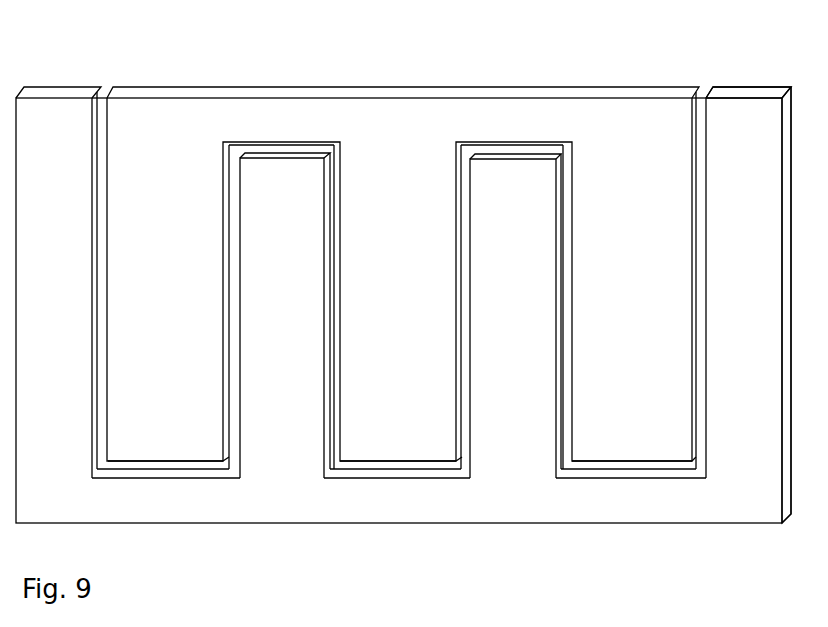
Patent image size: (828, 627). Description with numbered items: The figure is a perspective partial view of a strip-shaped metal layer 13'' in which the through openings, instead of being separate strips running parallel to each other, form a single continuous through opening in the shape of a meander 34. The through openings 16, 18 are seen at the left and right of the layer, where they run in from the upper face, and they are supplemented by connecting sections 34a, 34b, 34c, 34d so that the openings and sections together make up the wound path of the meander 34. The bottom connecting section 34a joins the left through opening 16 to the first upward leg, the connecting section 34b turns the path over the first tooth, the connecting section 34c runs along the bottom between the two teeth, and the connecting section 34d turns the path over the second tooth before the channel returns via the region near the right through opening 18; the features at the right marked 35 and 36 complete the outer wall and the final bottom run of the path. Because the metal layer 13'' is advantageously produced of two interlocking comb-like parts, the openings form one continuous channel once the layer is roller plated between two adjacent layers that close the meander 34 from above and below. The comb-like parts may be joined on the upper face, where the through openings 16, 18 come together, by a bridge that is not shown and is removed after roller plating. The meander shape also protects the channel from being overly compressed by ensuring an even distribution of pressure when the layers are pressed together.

The metal layer 13'' is at (403, 264).
The through opening 16 is at (107, 135).
The through opening 18 is at (696, 200).
The meander 34 is at (458, 482).
The connecting section 34a is at (140, 468).
The connecting section 34b is at (279, 148).
The connecting section 34c is at (367, 468).
The connecting section 34d is at (527, 148).
The right block 35 is at (752, 127).
The third groove bottom section 36 is at (612, 468).